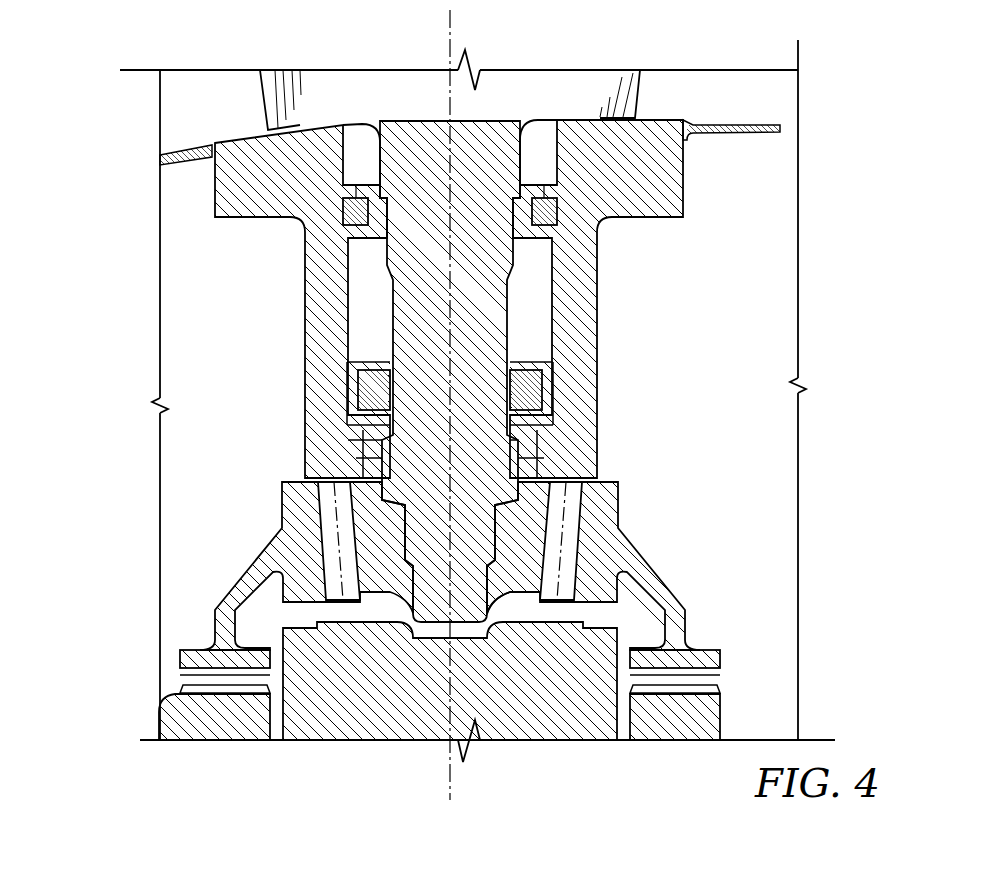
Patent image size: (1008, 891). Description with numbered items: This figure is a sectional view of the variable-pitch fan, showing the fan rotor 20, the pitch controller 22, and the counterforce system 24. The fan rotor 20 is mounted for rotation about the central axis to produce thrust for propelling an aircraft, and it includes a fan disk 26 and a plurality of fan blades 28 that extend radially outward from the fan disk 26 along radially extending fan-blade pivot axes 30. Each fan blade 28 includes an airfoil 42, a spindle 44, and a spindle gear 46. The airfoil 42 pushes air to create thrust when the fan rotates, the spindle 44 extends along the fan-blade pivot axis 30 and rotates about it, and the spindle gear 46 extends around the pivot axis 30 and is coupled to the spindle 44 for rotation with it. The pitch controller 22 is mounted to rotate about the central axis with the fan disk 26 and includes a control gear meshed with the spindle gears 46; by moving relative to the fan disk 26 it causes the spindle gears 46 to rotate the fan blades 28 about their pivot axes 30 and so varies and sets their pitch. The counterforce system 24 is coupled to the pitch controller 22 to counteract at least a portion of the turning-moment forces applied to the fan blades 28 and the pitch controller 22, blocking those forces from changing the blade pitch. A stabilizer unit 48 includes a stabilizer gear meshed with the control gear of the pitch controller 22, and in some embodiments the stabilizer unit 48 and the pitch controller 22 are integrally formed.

The fan rotor 20 is at (133, 103).
The pitch controller 22 is at (647, 548).
The counterforce system 24 is at (727, 706).
The fan disk 26 is at (200, 187).
The fan blade 28 is at (642, 85).
The fan-blade pivot axis 30 is at (455, 348).
The airfoil 42 is at (345, 82).
The spindle 44 is at (524, 477).
The spindle gear 46 is at (528, 596).
The stabilizer unit 48 is at (727, 733).